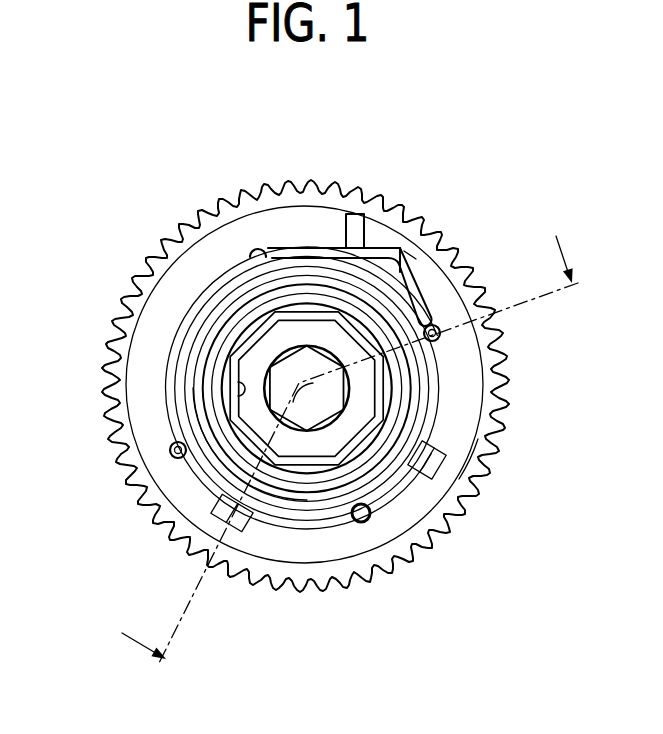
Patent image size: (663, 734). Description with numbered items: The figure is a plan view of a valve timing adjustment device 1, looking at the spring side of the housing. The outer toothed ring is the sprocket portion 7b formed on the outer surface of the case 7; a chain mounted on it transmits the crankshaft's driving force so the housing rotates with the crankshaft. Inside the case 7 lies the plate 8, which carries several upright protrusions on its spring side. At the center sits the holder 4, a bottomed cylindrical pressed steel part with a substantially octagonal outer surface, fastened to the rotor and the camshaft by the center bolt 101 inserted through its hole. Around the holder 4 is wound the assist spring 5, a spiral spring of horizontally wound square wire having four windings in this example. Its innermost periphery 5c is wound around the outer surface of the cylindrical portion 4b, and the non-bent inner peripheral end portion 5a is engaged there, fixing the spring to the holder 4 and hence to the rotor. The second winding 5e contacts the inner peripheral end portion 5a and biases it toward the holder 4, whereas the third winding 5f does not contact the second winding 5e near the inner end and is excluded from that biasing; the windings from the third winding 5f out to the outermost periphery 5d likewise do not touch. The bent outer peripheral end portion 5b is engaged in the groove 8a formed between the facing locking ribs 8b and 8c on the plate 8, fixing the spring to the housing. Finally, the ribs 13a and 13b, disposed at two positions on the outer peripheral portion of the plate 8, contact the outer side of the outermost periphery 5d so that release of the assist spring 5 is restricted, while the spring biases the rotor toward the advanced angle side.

The valve timing adjustment device 1 is at (300, 93).
The holder 4 is at (230, 410).
The cylindrical portion 4b is at (252, 394).
The assist spring 5 is at (215, 288).
The inner peripheral end portion 5a is at (320, 470).
The outer peripheral end portion 5b is at (412, 248).
The innermost periphery 5c is at (227, 362).
The outermost periphery 5d is at (325, 397).
The second winding 5e is at (370, 508).
The third winding 5f is at (328, 497).
The case 7 is at (288, 188).
The sprocket portion 7b is at (226, 200).
The plate 8 is at (220, 260).
The groove 8a is at (398, 247).
The locking rib 8b is at (362, 236).
The locking rib 8c is at (410, 280).
The rib 13a is at (215, 507).
The rib 13b is at (443, 478).
The center bolt 101 is at (465, 448).